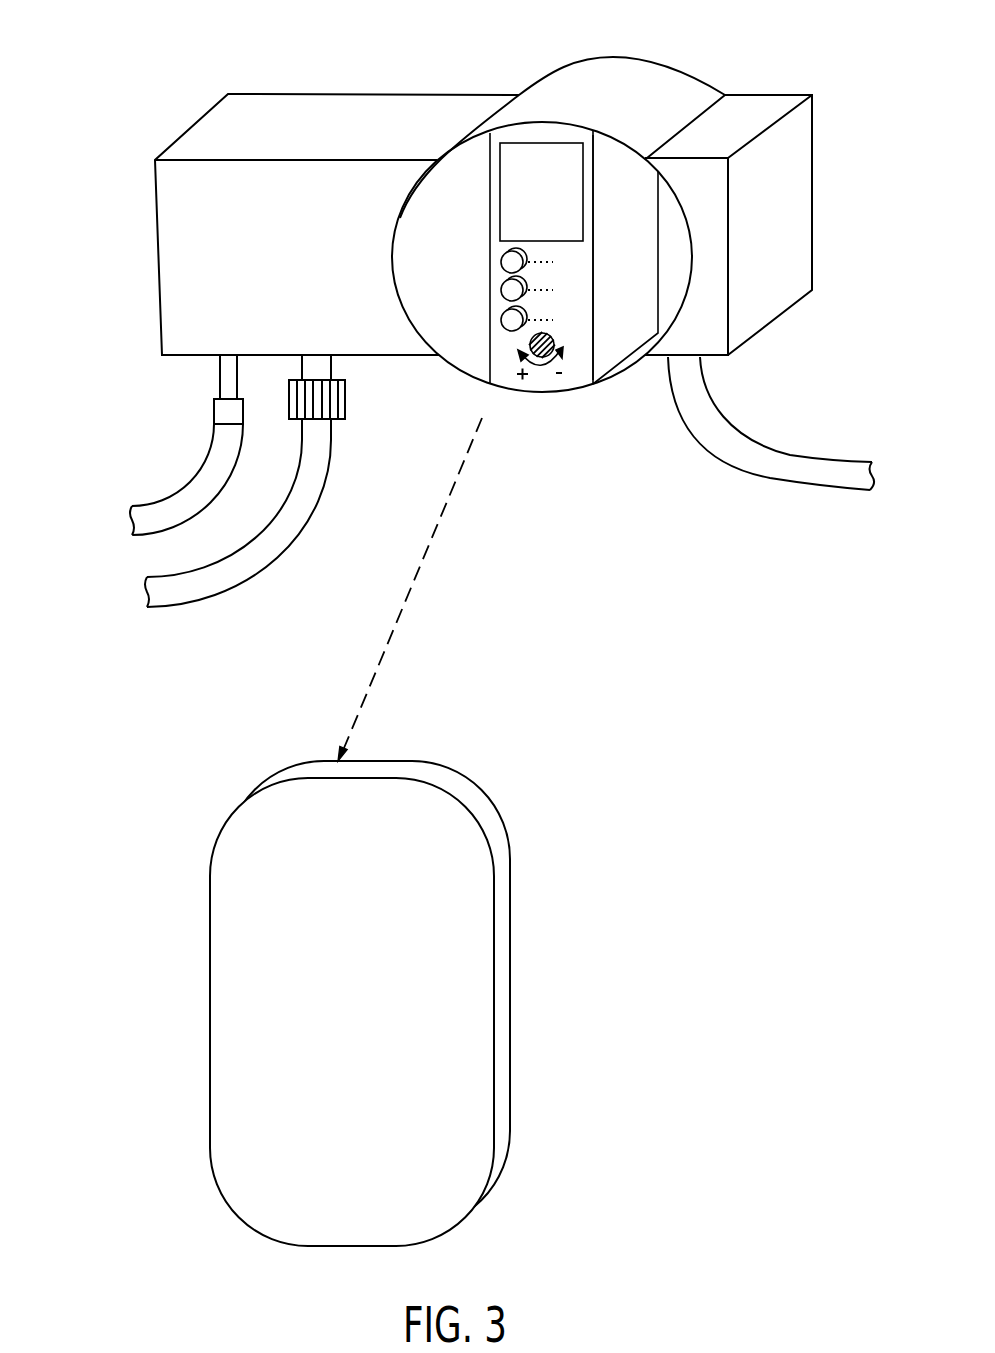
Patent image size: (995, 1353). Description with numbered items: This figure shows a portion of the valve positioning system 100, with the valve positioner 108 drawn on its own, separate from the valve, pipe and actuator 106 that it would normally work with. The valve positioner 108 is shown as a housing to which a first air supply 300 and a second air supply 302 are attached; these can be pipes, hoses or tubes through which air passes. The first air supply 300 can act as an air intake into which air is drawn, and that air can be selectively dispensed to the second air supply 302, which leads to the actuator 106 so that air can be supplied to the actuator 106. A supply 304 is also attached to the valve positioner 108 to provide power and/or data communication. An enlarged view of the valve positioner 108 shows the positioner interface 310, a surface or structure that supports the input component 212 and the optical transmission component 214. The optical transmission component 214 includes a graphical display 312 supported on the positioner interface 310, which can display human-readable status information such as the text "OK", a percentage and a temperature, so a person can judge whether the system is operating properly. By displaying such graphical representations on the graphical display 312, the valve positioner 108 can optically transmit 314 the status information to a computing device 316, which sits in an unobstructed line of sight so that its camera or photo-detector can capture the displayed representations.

The valve positioning system 100 is at (124, 67).
The valve positioner 108 is at (510, 82).
The optical transmission component 214 is at (411, 230).
The positioner interface 310 is at (602, 143).
The graphical display 312 is at (550, 150).
The input component 212 is at (485, 248).
The first air supply 300 is at (178, 492).
The second air supply 302 is at (220, 597).
The supply 304 is at (802, 483).
The optical transmission 314 is at (410, 582).
The computing device 316 is at (209, 1013).
The actuator 106 is at (145, 595).